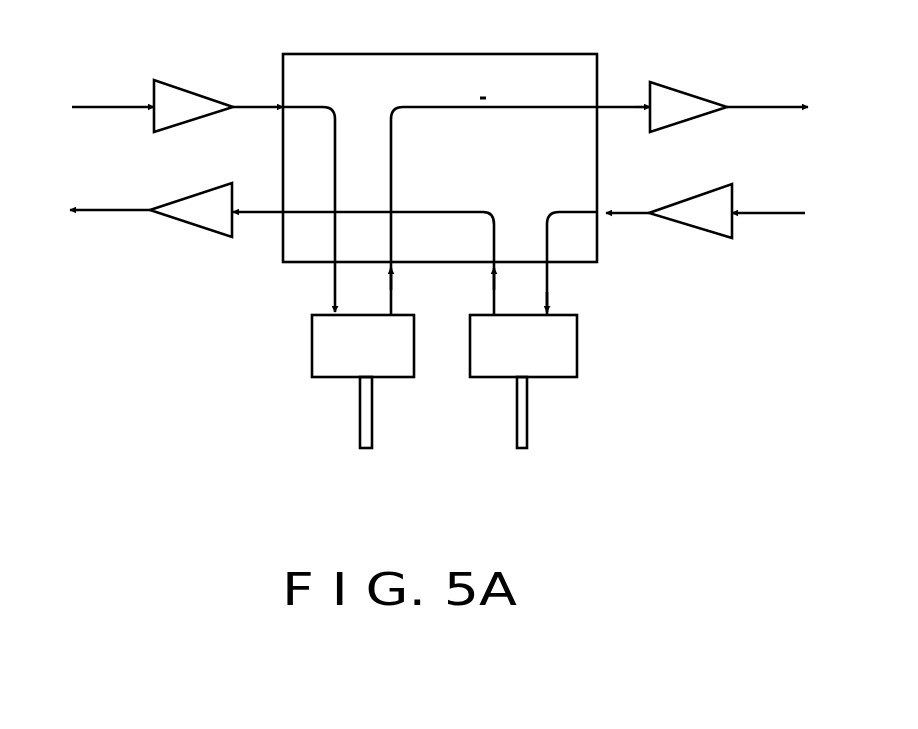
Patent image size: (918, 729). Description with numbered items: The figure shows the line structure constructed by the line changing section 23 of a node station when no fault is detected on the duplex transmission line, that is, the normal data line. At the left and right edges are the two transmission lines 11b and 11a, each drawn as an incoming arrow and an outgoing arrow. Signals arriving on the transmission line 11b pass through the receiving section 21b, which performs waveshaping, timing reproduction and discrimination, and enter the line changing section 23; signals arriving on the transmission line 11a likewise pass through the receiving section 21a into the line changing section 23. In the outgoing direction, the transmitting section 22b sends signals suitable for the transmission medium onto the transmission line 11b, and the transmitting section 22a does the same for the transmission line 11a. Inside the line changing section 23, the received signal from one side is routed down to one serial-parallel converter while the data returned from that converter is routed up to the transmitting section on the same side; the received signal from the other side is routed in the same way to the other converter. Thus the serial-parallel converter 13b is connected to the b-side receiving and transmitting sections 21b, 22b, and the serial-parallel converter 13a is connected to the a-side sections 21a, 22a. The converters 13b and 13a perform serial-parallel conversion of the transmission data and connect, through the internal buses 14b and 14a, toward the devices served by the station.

The transmission line 11a is at (99, 212).
The transmission line 11b is at (89, 104).
The serial-parallel converter 13a is at (577, 358).
The serial-parallel converter 13b is at (312, 360).
The internal bus 14a is at (530, 428).
The internal bus 14b is at (357, 440).
The receiving section 21a is at (686, 228).
The receiving section 21b is at (203, 95).
The transmitting section 22a is at (190, 227).
The transmitting section 22b is at (700, 96).
The line changing section 23 is at (535, 54).